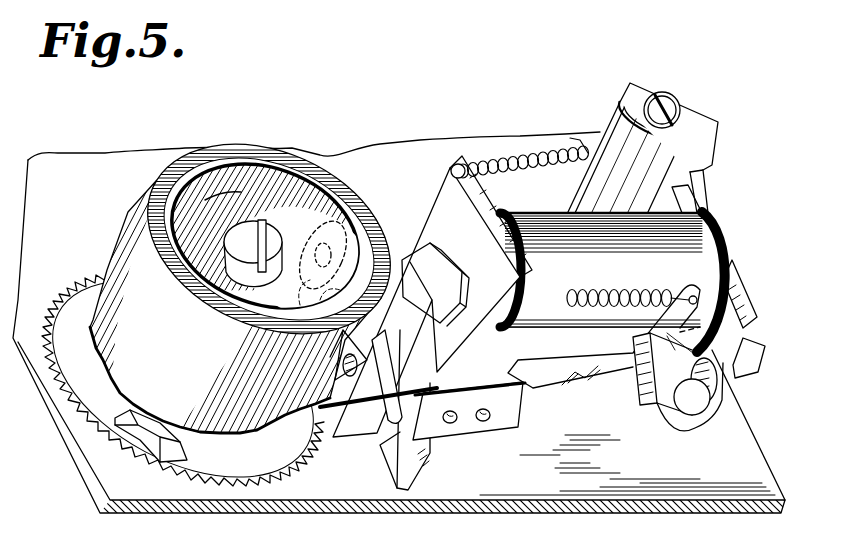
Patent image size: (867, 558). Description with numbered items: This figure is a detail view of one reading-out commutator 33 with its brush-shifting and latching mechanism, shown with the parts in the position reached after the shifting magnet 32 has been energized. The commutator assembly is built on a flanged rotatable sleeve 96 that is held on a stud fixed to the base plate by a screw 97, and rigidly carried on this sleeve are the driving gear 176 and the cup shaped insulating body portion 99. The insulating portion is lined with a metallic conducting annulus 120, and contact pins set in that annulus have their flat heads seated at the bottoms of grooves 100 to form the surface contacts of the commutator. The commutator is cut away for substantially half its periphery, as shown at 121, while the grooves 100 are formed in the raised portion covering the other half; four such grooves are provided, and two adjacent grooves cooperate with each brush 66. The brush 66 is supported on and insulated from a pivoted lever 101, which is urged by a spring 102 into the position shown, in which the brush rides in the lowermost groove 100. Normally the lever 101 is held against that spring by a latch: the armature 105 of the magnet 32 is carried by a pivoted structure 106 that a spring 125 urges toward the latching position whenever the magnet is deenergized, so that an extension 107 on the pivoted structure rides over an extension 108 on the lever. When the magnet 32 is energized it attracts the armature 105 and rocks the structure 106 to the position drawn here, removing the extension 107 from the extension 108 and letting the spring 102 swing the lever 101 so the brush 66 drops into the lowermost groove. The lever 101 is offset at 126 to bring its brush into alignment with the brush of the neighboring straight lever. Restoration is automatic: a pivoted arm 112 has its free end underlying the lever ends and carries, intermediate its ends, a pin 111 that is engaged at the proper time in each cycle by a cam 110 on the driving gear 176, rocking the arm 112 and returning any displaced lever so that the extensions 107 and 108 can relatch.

The shifting magnet 32 is at (572, 228).
The commutator 33 is at (347, 210).
The brush 66 is at (333, 415).
The flanged rotatable sleeve 96 is at (218, 205).
The screw 97 is at (250, 232).
The cup shaped insulating body portion 99 is at (372, 190).
The groove 100 is at (366, 405).
The pivoted lever 101 is at (605, 387).
The spring 102 is at (606, 300).
The armature 105 is at (690, 197).
The pivoted structure 106 is at (717, 165).
The extension 107 is at (732, 355).
The extension 108 is at (760, 342).
The cam 110 is at (160, 433).
The pin 111 is at (388, 365).
The pivoted arm 112 is at (408, 468).
The metallic conducting annulus 120 is at (183, 180).
The cut away portion 121 is at (133, 232).
The spring 125 is at (520, 160).
The offset 126 is at (537, 387).
The driving gear 176 is at (78, 282).